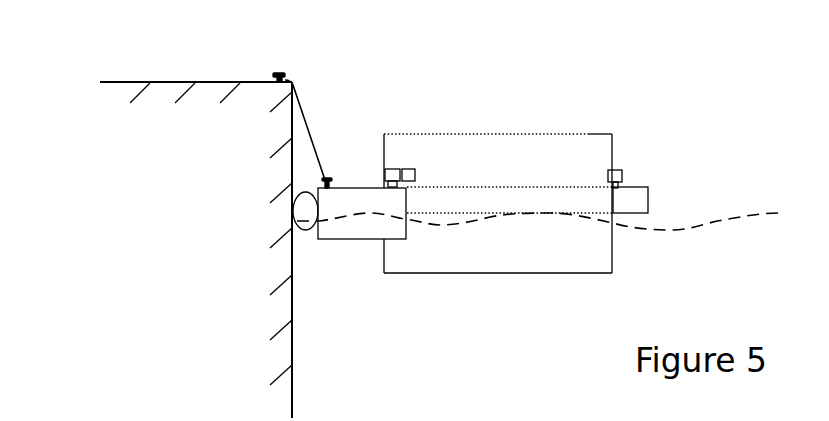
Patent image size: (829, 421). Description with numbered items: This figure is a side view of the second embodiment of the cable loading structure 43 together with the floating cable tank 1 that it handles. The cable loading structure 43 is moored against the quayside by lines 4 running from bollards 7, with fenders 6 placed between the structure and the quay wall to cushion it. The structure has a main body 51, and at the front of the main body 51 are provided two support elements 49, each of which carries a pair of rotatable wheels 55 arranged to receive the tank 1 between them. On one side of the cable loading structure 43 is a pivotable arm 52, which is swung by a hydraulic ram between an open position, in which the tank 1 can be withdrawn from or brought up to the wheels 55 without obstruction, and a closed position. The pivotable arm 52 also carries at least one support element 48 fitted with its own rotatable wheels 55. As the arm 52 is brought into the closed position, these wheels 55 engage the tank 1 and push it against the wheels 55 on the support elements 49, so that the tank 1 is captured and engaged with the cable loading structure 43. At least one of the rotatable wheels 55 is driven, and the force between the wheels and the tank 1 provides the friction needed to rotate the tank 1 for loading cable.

The floating cable tank 1 is at (590, 133).
The lines 4 is at (302, 98).
The fenders 6 is at (305, 232).
The bollards 7 is at (324, 177).
The cable loading structure 43 is at (362, 262).
The support element 48 is at (624, 178).
The support elements 49 is at (385, 168).
The main body 51 is at (377, 226).
The pivotable arm 52 is at (648, 203).
The rotatable wheels 55 is at (393, 168).